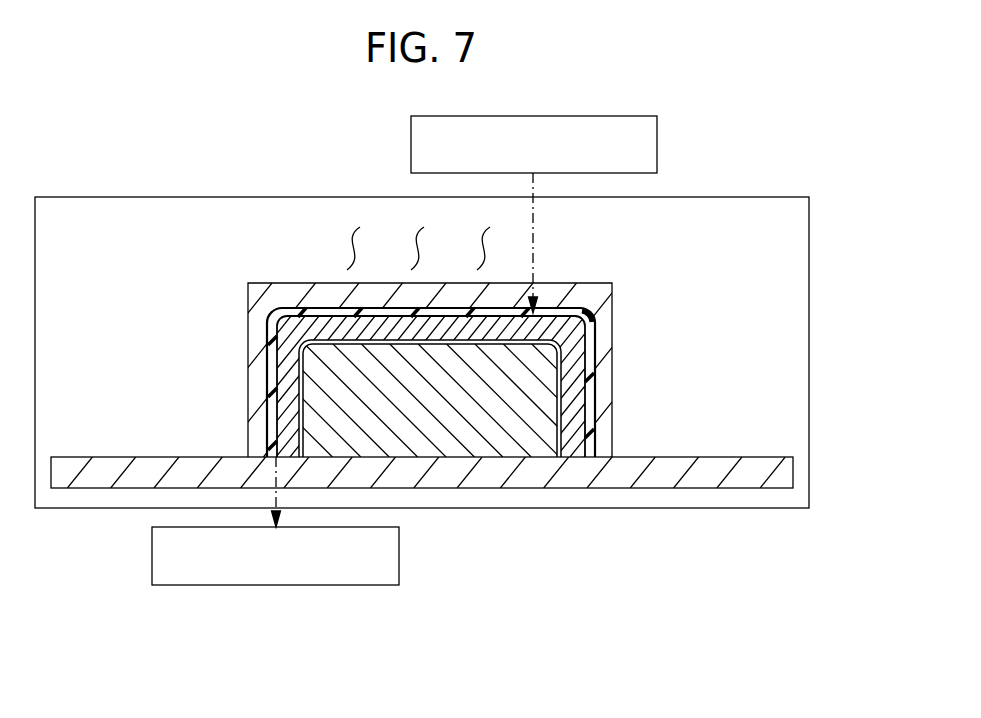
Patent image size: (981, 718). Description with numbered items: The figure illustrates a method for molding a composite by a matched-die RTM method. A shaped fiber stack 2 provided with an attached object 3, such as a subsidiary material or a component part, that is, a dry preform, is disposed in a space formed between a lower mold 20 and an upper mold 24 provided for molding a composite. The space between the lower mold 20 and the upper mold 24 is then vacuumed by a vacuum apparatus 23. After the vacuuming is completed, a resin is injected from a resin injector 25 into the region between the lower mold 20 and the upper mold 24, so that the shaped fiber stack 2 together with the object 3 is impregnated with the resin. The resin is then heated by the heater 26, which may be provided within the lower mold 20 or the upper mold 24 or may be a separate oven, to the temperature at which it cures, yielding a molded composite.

The fiber stack 2 is at (288, 362).
The object 3 is at (315, 310).
The lower mold 20 is at (438, 435).
The vacuum apparatus 23 is at (152, 556).
The upper mold 24 is at (605, 338).
The resin injector 25 is at (657, 142).
The heater 26 is at (743, 510).